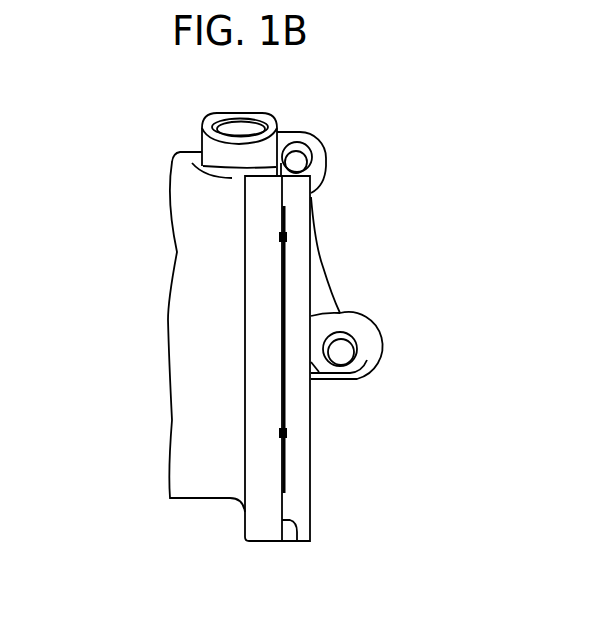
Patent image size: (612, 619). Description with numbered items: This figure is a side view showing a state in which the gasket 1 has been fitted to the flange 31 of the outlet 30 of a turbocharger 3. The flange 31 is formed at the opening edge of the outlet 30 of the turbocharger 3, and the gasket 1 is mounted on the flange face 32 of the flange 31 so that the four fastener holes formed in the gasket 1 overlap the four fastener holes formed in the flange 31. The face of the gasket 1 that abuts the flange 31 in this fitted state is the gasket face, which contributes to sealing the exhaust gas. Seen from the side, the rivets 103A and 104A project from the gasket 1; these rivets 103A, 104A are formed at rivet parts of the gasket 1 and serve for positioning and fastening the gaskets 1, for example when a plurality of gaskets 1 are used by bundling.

The gasket 1 is at (325, 472).
The turbocharger 3 is at (180, 139).
The outlet 30 is at (190, 340).
The flange 31 is at (265, 525).
The flange face 32 is at (296, 528).
The rivet 103A is at (288, 433).
The rivet 104A is at (288, 237).